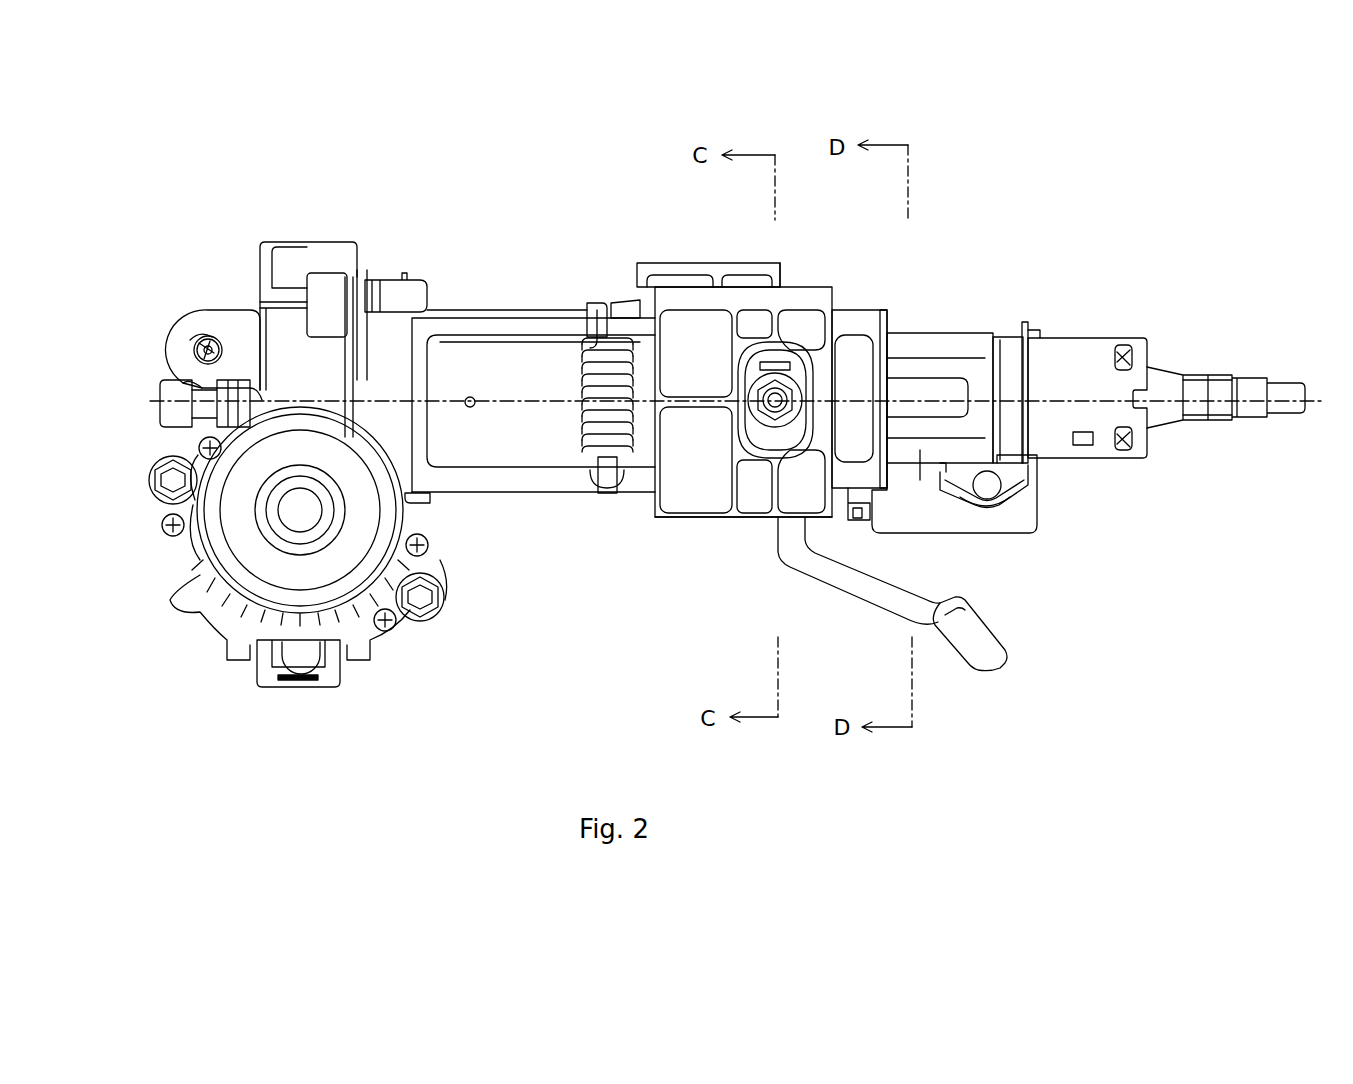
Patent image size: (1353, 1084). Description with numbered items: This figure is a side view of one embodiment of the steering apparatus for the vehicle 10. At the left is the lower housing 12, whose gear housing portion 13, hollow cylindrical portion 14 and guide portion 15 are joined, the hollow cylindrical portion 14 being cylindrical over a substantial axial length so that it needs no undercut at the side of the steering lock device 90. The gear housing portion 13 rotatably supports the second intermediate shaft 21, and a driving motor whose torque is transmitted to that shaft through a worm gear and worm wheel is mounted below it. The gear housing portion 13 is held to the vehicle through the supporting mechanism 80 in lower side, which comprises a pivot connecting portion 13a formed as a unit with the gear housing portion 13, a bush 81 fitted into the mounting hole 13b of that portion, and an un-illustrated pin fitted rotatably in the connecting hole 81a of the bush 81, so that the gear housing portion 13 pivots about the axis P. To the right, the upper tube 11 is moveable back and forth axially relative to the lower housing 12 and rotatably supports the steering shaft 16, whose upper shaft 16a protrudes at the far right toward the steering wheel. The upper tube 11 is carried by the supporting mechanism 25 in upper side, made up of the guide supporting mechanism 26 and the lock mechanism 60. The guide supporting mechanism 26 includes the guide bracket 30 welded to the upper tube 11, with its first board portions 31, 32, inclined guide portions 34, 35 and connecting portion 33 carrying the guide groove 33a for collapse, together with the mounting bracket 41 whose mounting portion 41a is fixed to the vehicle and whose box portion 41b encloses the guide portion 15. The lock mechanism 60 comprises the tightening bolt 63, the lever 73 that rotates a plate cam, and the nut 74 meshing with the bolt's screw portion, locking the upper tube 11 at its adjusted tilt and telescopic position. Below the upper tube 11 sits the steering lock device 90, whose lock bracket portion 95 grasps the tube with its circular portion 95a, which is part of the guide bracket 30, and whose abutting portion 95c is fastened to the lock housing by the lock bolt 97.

The steering apparatus for the vehicle 10 is at (1038, 275).
The upper tube 11 is at (1100, 345).
The lower housing 12 is at (500, 298).
The gear housing portion 13 is at (310, 248).
The pivot connecting portion 13a is at (200, 322).
The mounting hole 13b is at (190, 362).
The hollow cylindrical portion 14 is at (540, 315).
The guide portion 15 is at (865, 315).
The steering shaft 16 is at (1238, 352).
The upper shaft 16a is at (1220, 417).
The second intermediate shaft 21 is at (173, 420).
The supporting mechanism in upper side 25 is at (734, 246).
The guide supporting mechanism 26 is at (353, 587).
The guide bracket 30 is at (912, 323).
The first board portion 31 is at (965, 370).
The first board portion 32 is at (950, 505).
The connecting portion 33 is at (1000, 375).
The guide groove for collapse 33a is at (938, 385).
The guide portion 34 is at (960, 350).
The guide portion 35 is at (920, 480).
The mounting bracket 41 is at (680, 252).
The mounting portion 41a is at (765, 268).
The box portion 41b is at (688, 517).
The lock mechanism 60 is at (760, 458).
The tightening bolt 63 is at (765, 413).
The lever 73 is at (878, 600).
The nut 74 is at (763, 430).
The supporting mechanism in lower side 80 is at (211, 294).
The bush 81 is at (196, 356).
The connecting hole 81a is at (195, 348).
The steering lock device 90 is at (1055, 532).
The lock bracket portion 95 is at (1045, 489).
The circular portion 95a is at (1012, 380).
The abutting portion 95c is at (1022, 527).
The lock bolt 97 is at (1005, 500).
The axis of the shaft supporting pin P is at (208, 340).